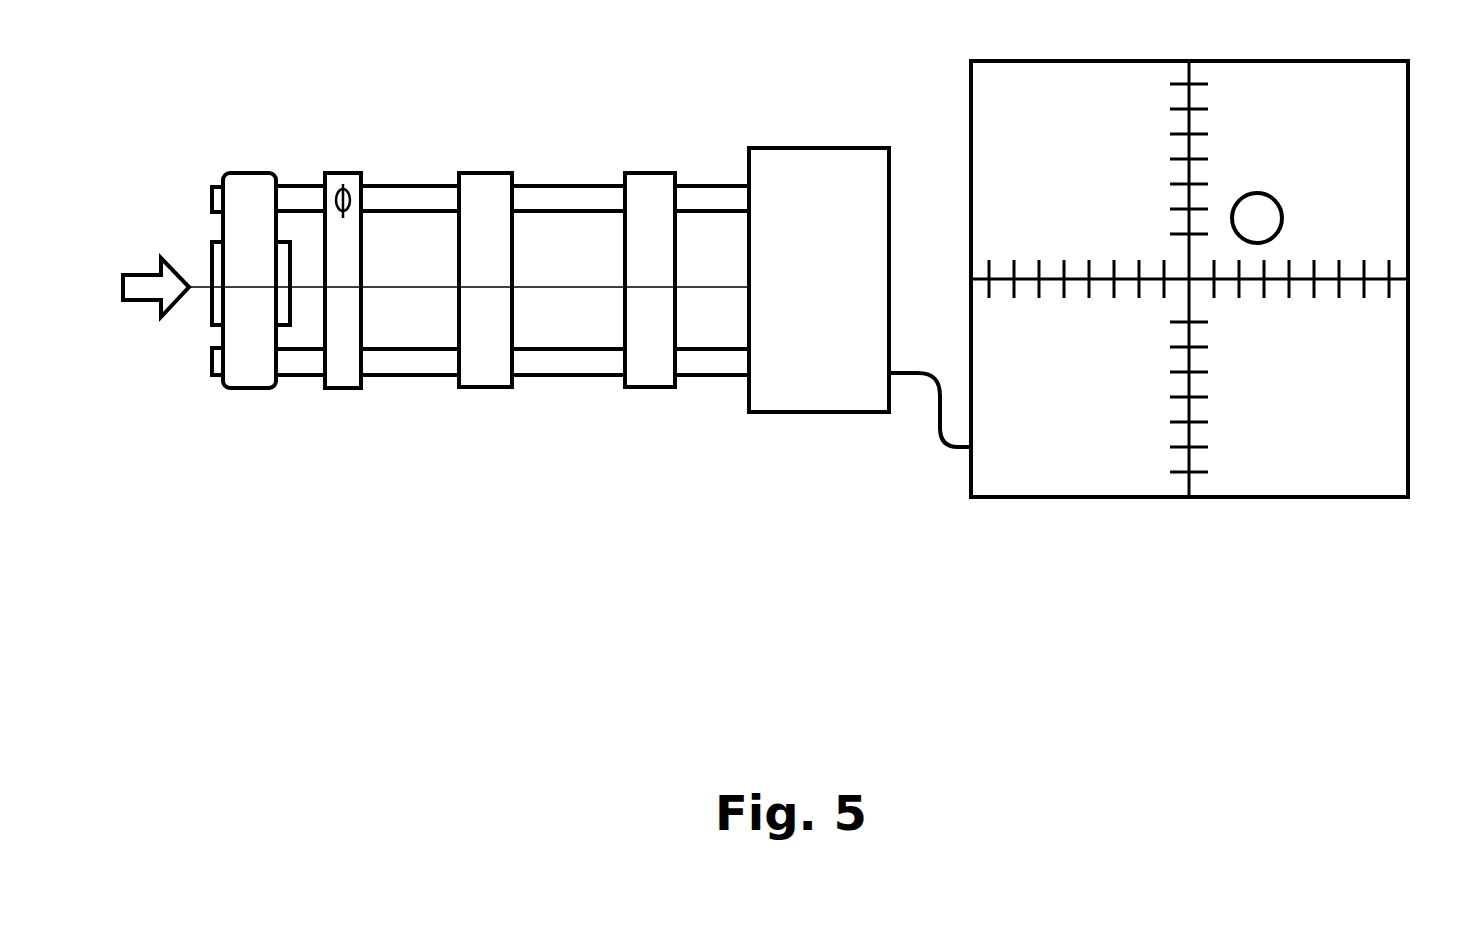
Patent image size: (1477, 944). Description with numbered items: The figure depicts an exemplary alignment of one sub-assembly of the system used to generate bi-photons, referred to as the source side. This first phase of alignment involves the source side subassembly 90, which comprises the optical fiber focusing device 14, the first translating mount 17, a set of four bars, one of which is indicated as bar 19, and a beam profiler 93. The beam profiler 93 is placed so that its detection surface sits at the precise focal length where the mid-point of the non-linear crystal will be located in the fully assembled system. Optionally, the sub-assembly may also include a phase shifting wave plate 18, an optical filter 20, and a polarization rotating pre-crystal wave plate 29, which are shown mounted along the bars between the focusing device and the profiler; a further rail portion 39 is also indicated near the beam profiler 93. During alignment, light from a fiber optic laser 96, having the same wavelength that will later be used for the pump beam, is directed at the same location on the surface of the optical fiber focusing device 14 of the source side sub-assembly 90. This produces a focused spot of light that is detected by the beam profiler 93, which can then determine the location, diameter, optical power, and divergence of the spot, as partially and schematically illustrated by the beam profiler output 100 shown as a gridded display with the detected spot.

The optical fiber focusing device 14 is at (217, 323).
The first translating mount 17 is at (250, 400).
The phase shifting wave plate 18 is at (346, 400).
The bar 19 is at (570, 364).
The optical filter 20 is at (483, 400).
The polarization rotating pre-crystal wave plate 29 is at (658, 400).
The rail segment 39 is at (721, 362).
The source side subassembly 90 is at (1289, 697).
The beam profiler 93 is at (824, 425).
The fiber optic laser 96 is at (137, 312).
The beam profiler output 100 is at (1188, 512).